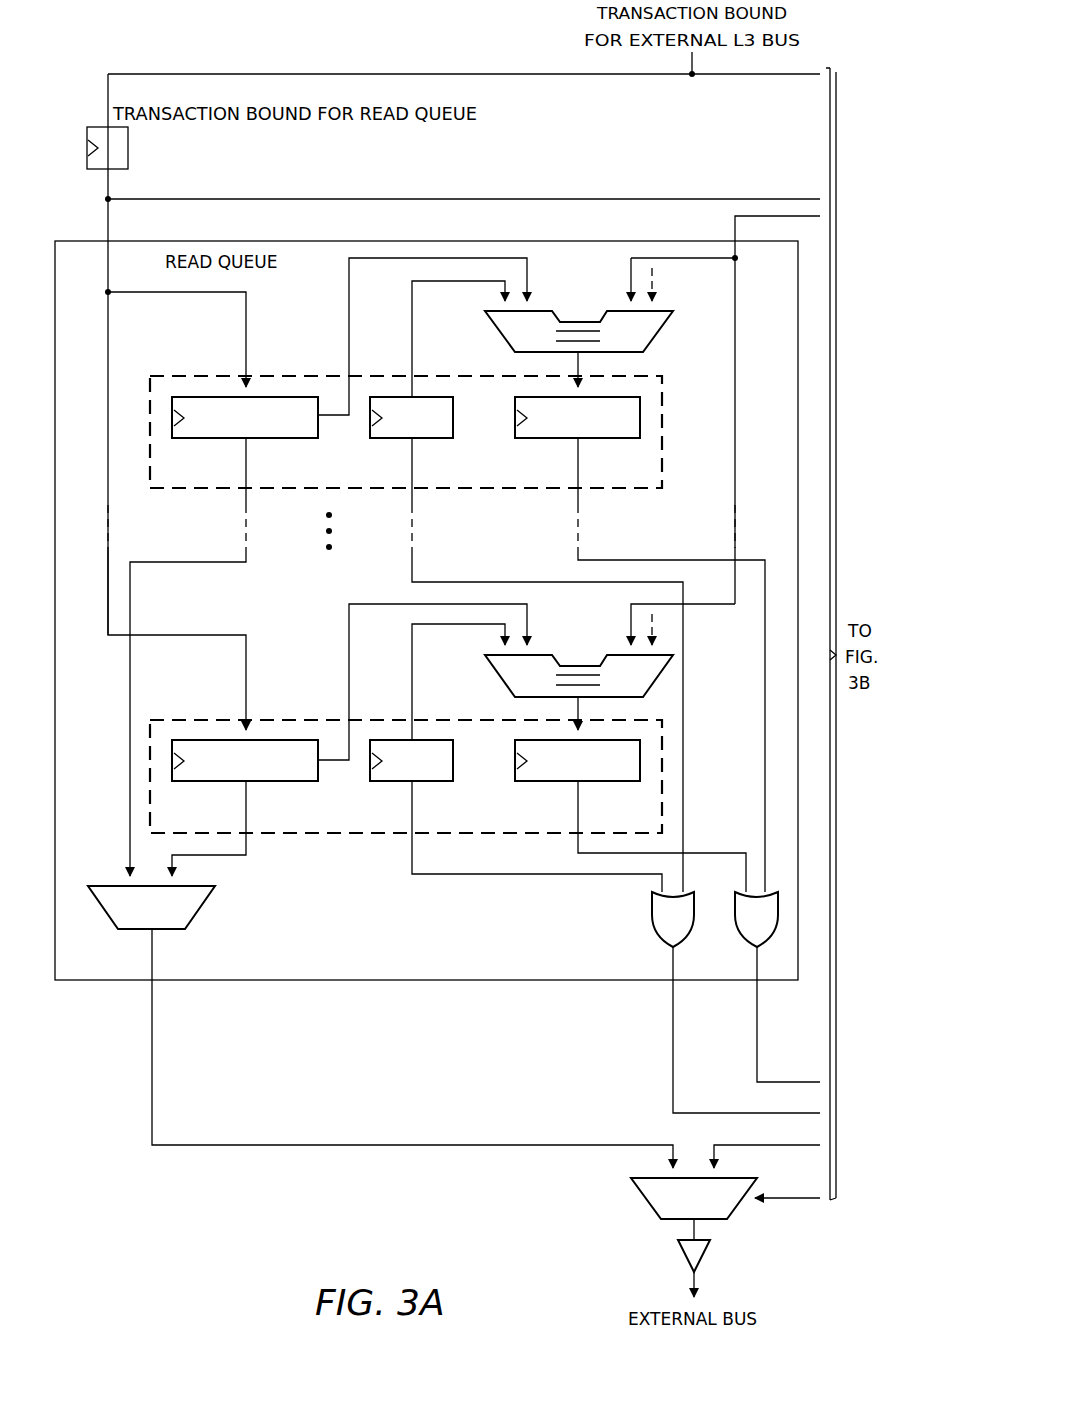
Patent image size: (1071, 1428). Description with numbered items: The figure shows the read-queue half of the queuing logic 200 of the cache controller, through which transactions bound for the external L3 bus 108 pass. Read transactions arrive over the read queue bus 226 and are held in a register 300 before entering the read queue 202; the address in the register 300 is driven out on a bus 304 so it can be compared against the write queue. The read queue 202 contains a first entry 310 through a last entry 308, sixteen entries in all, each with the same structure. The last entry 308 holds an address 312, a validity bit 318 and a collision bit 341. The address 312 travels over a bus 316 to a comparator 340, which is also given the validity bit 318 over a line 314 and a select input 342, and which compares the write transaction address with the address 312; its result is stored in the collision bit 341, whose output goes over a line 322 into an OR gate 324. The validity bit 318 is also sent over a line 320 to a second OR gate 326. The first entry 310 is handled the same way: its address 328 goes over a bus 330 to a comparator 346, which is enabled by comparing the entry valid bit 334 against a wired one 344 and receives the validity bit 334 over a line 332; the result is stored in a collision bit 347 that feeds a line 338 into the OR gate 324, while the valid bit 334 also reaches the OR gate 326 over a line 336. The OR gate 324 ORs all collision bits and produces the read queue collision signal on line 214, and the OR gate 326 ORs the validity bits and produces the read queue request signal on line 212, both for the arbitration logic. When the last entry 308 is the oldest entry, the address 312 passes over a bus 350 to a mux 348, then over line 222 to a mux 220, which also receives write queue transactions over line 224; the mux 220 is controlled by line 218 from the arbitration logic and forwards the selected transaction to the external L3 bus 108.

The read queue bus 226 is at (370, 73).
The register 300 is at (129, 151).
The bus 304 is at (450, 198).
The Entry N 308 is at (195, 376).
The Entry 0 310 is at (195, 720).
The address 312 is at (265, 440).
The line 314 is at (432, 284).
The bus 316 is at (346, 311).
The validity bit 318 is at (432, 440).
The line 320 is at (505, 582).
The line 322 is at (708, 560).
The OR gate 324 is at (745, 935).
The OR gate 326 is at (652, 905).
The address 328 is at (265, 783).
The bus 330 is at (382, 604).
The line 332 is at (440, 626).
The entry valid bit 334 is at (432, 783).
The line 336 is at (462, 876).
The line 338 is at (576, 803).
The comparator 340 is at (575, 321).
The collision bit 341 is at (598, 440).
The select line 342 is at (655, 297).
The "1" 344 is at (655, 640).
The comparator 346 is at (580, 665).
The collision bit 347 is at (598, 783).
The mux 348 is at (205, 910).
The bus 350 is at (192, 562).
The read queue 202 is at (432, 982).
The read queue request signal line 212 is at (672, 1030).
The read queue collision signal line 214 is at (756, 1030).
The line 218 is at (782, 1200).
The mux 220 is at (645, 1200).
The line 222 is at (150, 945).
The line 224 is at (765, 1147).
The queuing logic 200 is at (352, 1188).
The external L3 bus 108 is at (678, 1254).